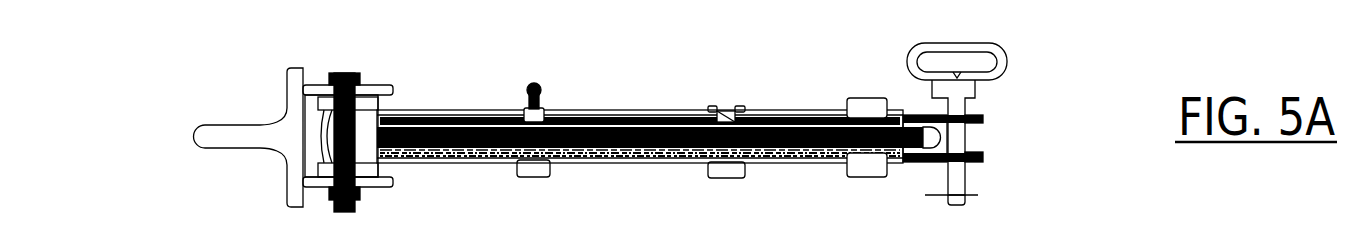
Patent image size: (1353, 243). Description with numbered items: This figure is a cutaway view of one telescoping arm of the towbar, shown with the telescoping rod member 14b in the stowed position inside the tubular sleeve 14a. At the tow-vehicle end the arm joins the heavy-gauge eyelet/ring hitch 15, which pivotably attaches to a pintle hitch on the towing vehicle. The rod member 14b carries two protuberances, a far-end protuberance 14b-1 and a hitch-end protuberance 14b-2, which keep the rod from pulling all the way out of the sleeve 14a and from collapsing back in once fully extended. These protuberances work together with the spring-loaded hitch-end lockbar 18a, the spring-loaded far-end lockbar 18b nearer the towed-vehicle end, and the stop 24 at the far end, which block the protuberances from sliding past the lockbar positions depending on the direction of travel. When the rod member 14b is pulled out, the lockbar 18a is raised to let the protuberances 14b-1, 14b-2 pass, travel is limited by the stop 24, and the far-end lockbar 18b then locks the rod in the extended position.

The eyelet/ring hitch 15 is at (233, 123).
The tubular sleeve 14a is at (432, 110).
The telescoping rod member 14b is at (790, 122).
The far-end protuberance 14b-1 is at (503, 155).
The hitch-end protuberance 14b-2 is at (395, 155).
The hitch-end lockbar 18a is at (527, 112).
The far-end lockbar 18b is at (728, 117).
The stop 24 is at (865, 100).